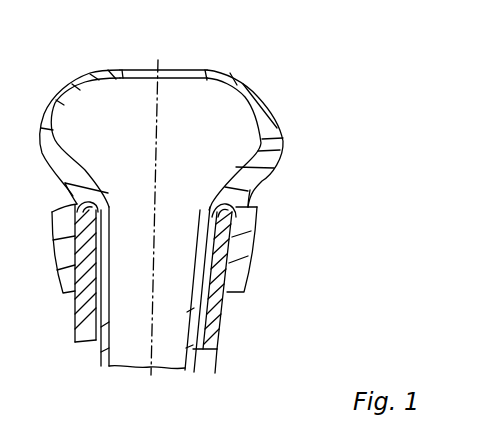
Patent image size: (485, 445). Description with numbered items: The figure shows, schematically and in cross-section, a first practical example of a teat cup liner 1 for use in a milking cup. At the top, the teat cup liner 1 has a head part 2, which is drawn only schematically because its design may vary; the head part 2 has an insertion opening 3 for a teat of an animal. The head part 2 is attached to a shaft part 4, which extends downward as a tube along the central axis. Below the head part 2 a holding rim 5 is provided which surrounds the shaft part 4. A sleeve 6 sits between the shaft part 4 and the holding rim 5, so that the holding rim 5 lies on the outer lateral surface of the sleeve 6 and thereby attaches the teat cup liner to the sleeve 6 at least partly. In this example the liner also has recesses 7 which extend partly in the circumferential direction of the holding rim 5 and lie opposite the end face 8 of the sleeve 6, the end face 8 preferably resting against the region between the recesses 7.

The teat cup liner 1 is at (372, 275).
The head part 2 is at (264, 94).
The insertion opening 3 is at (187, 70).
The shaft part 4 is at (97, 364).
The holding rim 5 is at (248, 267).
The sleeve 6 is at (215, 339).
The recesses 7 is at (67, 184).
The end face 8 is at (240, 218).